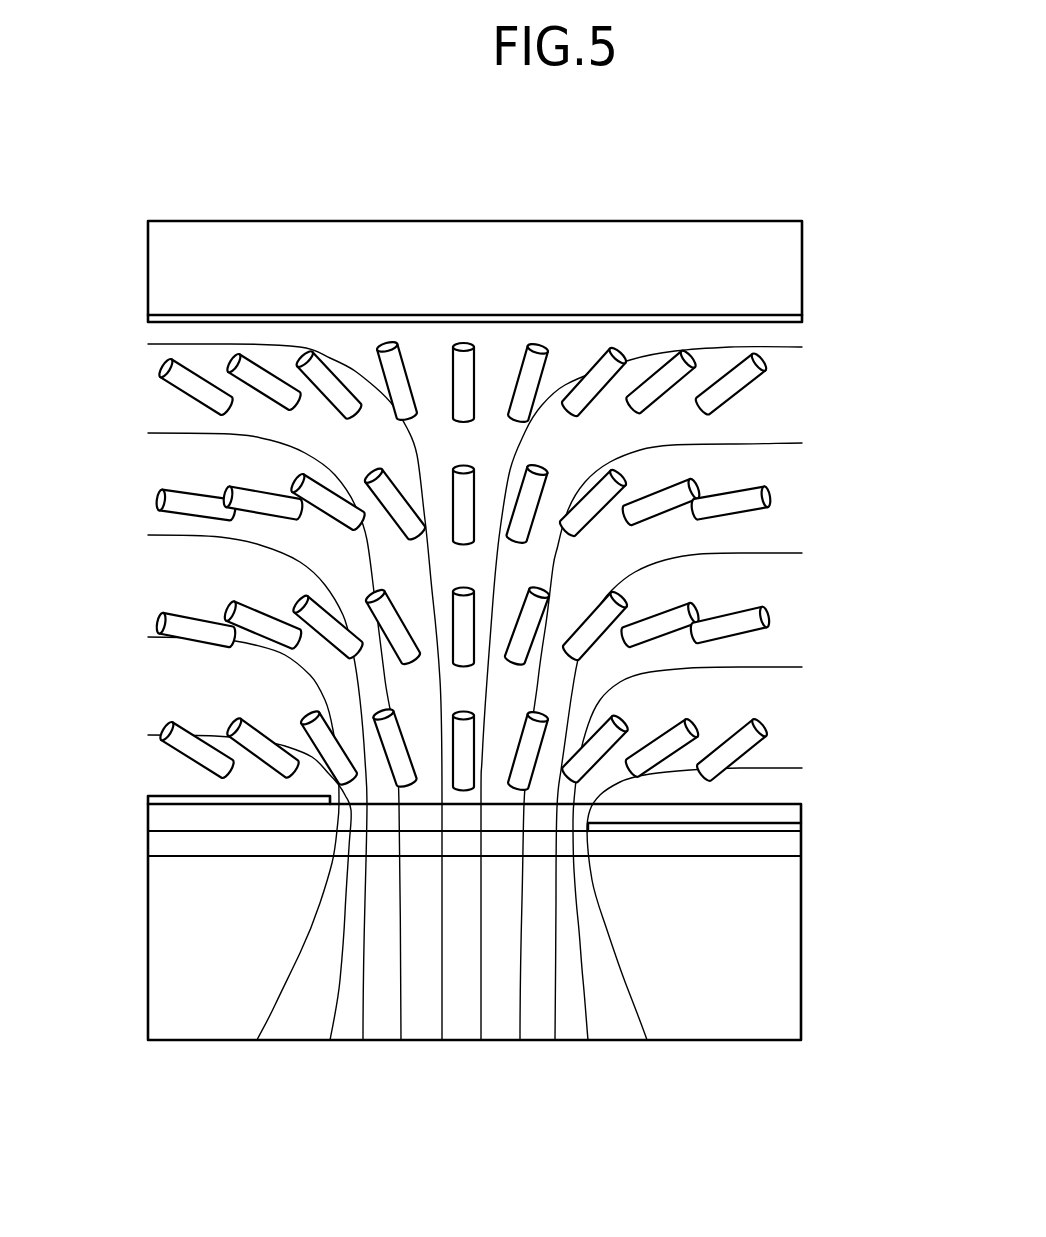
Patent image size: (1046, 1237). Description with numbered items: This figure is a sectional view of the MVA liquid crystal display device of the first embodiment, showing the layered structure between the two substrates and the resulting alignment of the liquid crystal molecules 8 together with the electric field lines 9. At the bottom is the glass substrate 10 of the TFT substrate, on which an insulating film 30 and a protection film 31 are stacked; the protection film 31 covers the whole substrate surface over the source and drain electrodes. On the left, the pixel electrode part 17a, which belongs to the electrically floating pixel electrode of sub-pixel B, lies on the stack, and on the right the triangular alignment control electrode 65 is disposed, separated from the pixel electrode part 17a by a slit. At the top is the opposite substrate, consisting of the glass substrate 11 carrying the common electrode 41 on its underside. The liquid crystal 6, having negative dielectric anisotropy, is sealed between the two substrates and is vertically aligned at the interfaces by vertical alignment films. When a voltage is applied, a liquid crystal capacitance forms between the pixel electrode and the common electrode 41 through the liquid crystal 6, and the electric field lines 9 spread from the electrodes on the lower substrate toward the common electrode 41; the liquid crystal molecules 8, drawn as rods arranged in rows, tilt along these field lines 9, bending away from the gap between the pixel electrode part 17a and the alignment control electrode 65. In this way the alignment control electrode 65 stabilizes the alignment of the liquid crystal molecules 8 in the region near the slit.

The liquid crystal 6 is at (918, 332).
The liquid crystal molecule 8 is at (768, 503).
The electric field line 9 is at (747, 558).
The glass substrate 10 is at (793, 927).
The glass substrate 11 is at (788, 252).
The pixel electrode part 17a is at (160, 800).
The insulating film 30 is at (789, 843).
The protection film 31 is at (793, 813).
The common electrode 41 is at (785, 325).
The alignment control electrode 65 is at (803, 828).